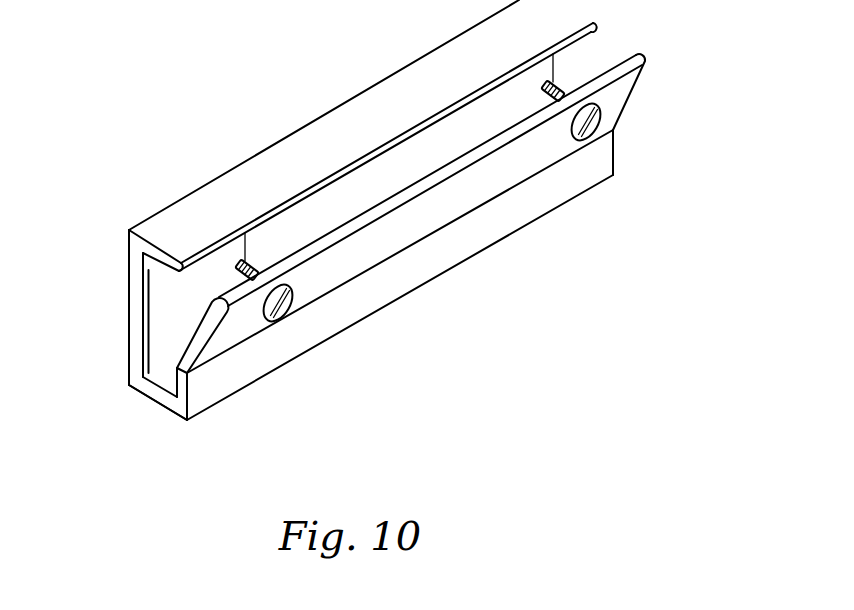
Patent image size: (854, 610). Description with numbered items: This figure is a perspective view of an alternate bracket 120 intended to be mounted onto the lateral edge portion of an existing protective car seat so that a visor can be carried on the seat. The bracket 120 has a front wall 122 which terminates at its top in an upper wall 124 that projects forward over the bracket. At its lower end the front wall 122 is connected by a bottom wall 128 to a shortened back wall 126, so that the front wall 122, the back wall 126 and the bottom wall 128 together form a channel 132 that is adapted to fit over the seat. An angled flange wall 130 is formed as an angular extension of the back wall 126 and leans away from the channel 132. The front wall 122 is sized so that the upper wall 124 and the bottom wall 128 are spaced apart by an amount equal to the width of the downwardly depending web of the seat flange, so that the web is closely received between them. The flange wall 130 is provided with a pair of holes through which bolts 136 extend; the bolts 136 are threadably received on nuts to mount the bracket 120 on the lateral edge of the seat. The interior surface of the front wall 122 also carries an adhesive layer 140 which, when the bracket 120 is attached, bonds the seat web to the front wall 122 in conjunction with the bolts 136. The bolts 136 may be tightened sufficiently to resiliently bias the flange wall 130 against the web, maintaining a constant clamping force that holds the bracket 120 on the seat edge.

The bracket 120 is at (272, 114).
The front wall 122 is at (129, 298).
The upper wall 124 is at (482, 53).
The back wall 126 is at (265, 352).
The bottom wall 128 is at (150, 401).
The flange wall 130 is at (342, 238).
The channel 132 is at (151, 318).
The bolts 136 is at (293, 300).
The adhesive layer 140 is at (465, 130).